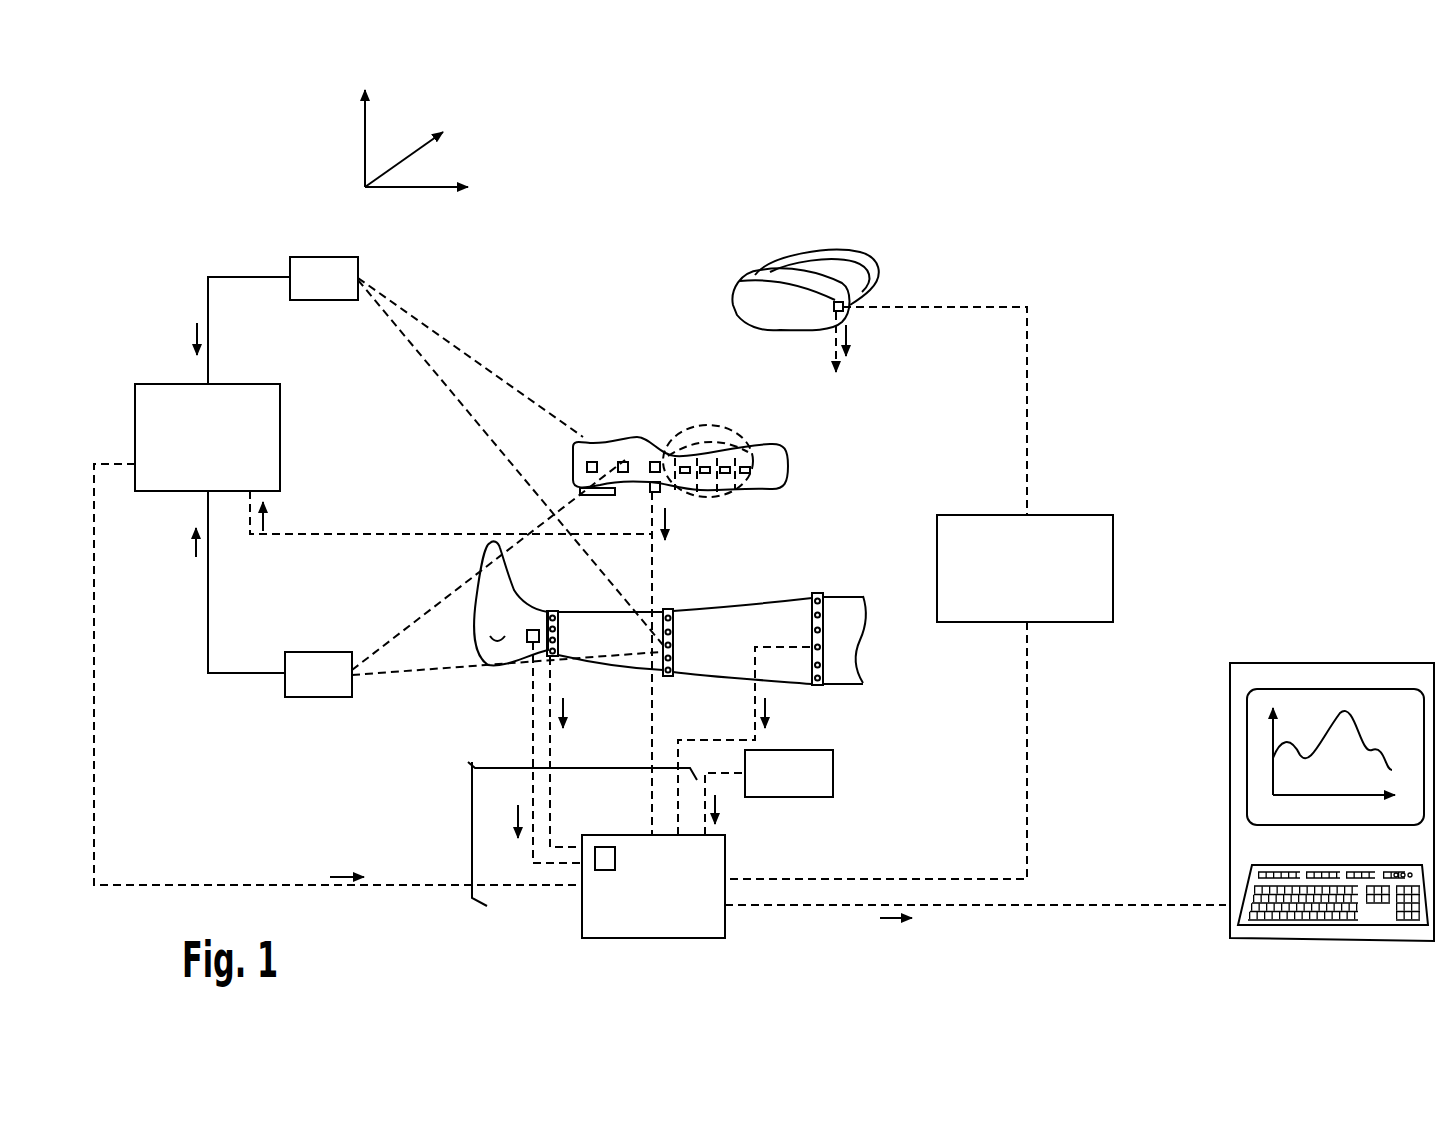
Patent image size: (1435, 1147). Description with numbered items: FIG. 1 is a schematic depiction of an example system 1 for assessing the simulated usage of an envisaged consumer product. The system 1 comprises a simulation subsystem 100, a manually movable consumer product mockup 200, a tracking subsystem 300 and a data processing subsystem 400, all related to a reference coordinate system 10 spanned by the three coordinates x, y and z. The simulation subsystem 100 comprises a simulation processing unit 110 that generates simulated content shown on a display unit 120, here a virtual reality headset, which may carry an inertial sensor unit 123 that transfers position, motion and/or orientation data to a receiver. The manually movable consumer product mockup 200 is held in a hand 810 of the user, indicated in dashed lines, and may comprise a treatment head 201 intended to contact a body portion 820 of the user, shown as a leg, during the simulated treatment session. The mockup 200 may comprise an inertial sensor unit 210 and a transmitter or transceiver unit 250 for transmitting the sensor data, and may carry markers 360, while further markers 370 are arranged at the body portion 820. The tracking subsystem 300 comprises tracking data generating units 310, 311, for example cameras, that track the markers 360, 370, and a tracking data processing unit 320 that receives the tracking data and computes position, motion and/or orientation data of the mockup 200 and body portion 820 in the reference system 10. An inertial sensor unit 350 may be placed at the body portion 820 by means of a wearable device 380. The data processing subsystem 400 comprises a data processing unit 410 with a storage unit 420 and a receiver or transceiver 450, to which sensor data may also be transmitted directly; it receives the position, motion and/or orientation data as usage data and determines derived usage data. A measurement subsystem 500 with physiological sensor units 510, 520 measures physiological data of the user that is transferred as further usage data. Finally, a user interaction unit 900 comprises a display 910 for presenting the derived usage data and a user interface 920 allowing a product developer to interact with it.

The system 1 is at (1200, 211).
The reference coordinate system 10 is at (305, 126).
The simulation subsystem 100 is at (1096, 372).
The simulation processing unit 110 is at (1128, 537).
The display unit 120 is at (893, 245).
The inertial sensor unit 123 is at (834, 302).
The manually movable consumer product mockup 200 is at (811, 452).
The treatment head 201 is at (598, 495).
The inertial sensor unit 210 is at (652, 462).
The transceiver unit 250 is at (650, 488).
The tracking subsystem 300 is at (155, 258).
The tracking data generating unit 310 is at (328, 300).
The tracking data generating unit 311 is at (318, 697).
The tracking data processing unit 320 is at (280, 450).
The inertial sensor unit 350 is at (673, 650).
The markers 360 is at (623, 462).
The markers 370 is at (560, 628).
The wearable device 380 is at (676, 677).
The data processing subsystem 400 is at (735, 945).
The data processing unit 410 is at (667, 900).
The storage unit 420 is at (833, 785).
The receiver or transceiver 450 is at (603, 870).
The measurement subsystem 500 is at (533, 628).
The physiological sensor unit 510 is at (528, 645).
The physiological sensor unit 520 is at (823, 648).
The hand of a user 810 is at (726, 425).
The body portion of the user 820 is at (850, 684).
The user interaction unit 900 is at (1338, 633).
The display 910 is at (1247, 748).
The user interface 920 is at (1251, 882).